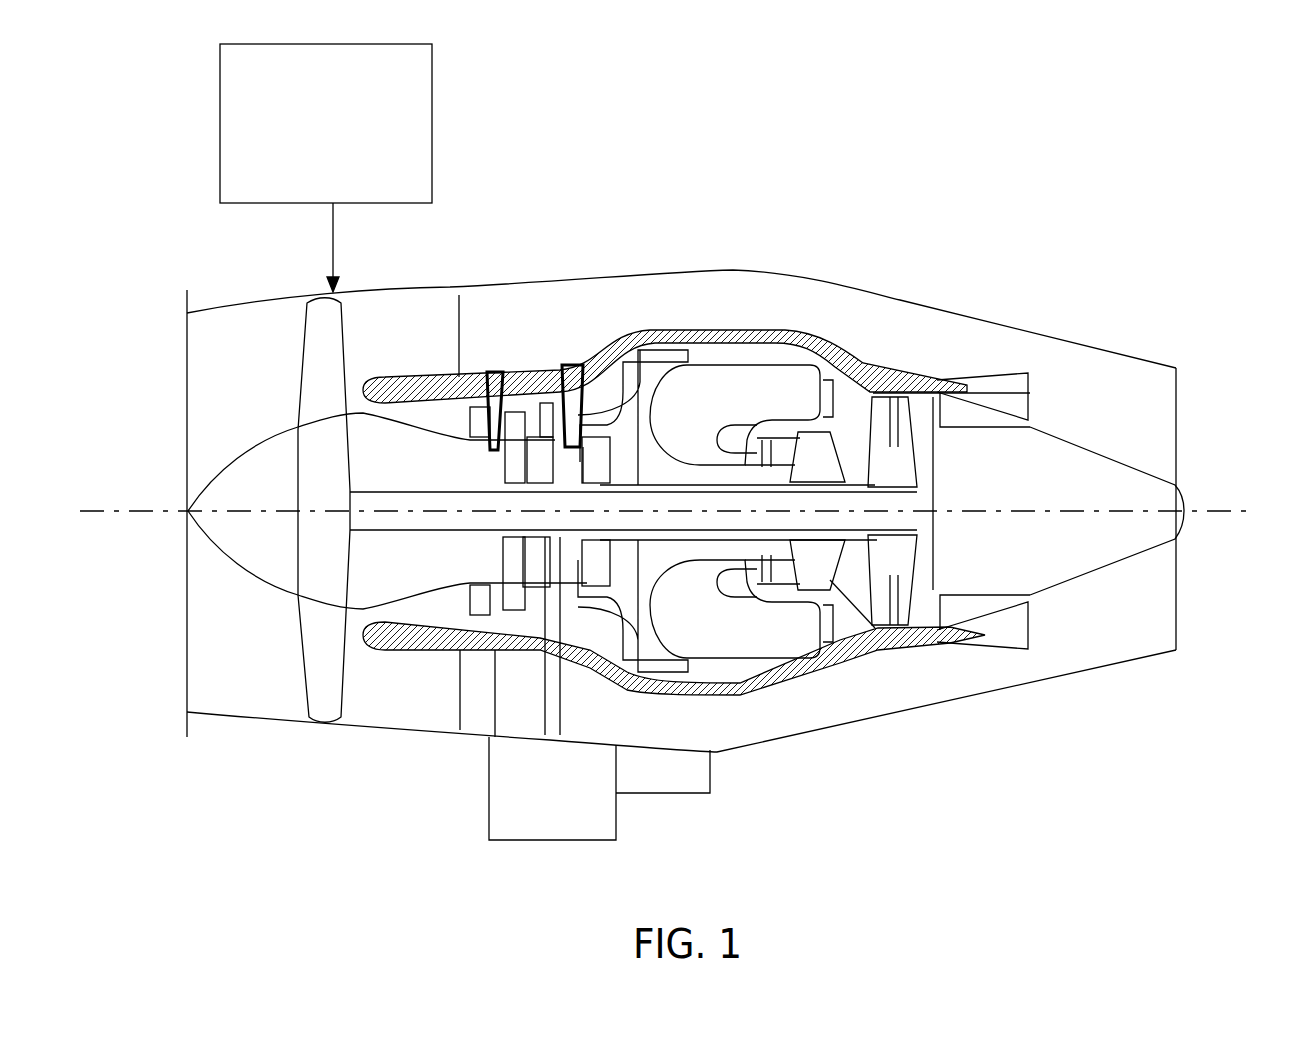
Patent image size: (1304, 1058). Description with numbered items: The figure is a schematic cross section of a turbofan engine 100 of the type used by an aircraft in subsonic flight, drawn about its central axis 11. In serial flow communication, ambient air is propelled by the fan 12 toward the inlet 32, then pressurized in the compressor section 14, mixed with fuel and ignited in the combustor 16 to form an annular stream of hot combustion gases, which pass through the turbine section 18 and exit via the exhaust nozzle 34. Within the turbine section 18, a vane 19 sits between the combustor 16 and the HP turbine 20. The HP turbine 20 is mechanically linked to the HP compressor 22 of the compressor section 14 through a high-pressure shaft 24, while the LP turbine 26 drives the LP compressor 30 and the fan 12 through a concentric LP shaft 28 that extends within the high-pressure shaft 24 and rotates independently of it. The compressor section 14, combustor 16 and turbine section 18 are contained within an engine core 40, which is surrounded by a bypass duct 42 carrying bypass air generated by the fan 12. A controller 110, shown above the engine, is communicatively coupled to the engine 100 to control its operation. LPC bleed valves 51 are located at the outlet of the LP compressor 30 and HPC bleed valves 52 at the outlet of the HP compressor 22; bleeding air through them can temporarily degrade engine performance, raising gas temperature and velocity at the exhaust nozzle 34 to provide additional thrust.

The engine 100 is at (1165, 124).
The controller 110 is at (355, 159).
The axis 11 is at (1213, 510).
The fan 12 is at (322, 648).
The compressor section 14 is at (520, 407).
The combustor 16 is at (740, 385).
The turbine section 18 is at (857, 655).
The vane 19 is at (748, 440).
The HP turbine 20 is at (838, 447).
The HP compressor 22 is at (583, 365).
The high-pressure shaft 24 is at (760, 438).
The LP turbine 26 is at (863, 413).
The LP shaft 28 is at (398, 533).
The LP compressor 30 is at (517, 420).
The inlet 32 is at (265, 400).
The exhaust nozzle 34 is at (1030, 413).
The engine core 40 is at (878, 650).
The bypass duct 42 is at (762, 722).
The LPC bleed valves 51 is at (493, 372).
The HPC bleed valves 52 is at (570, 365).